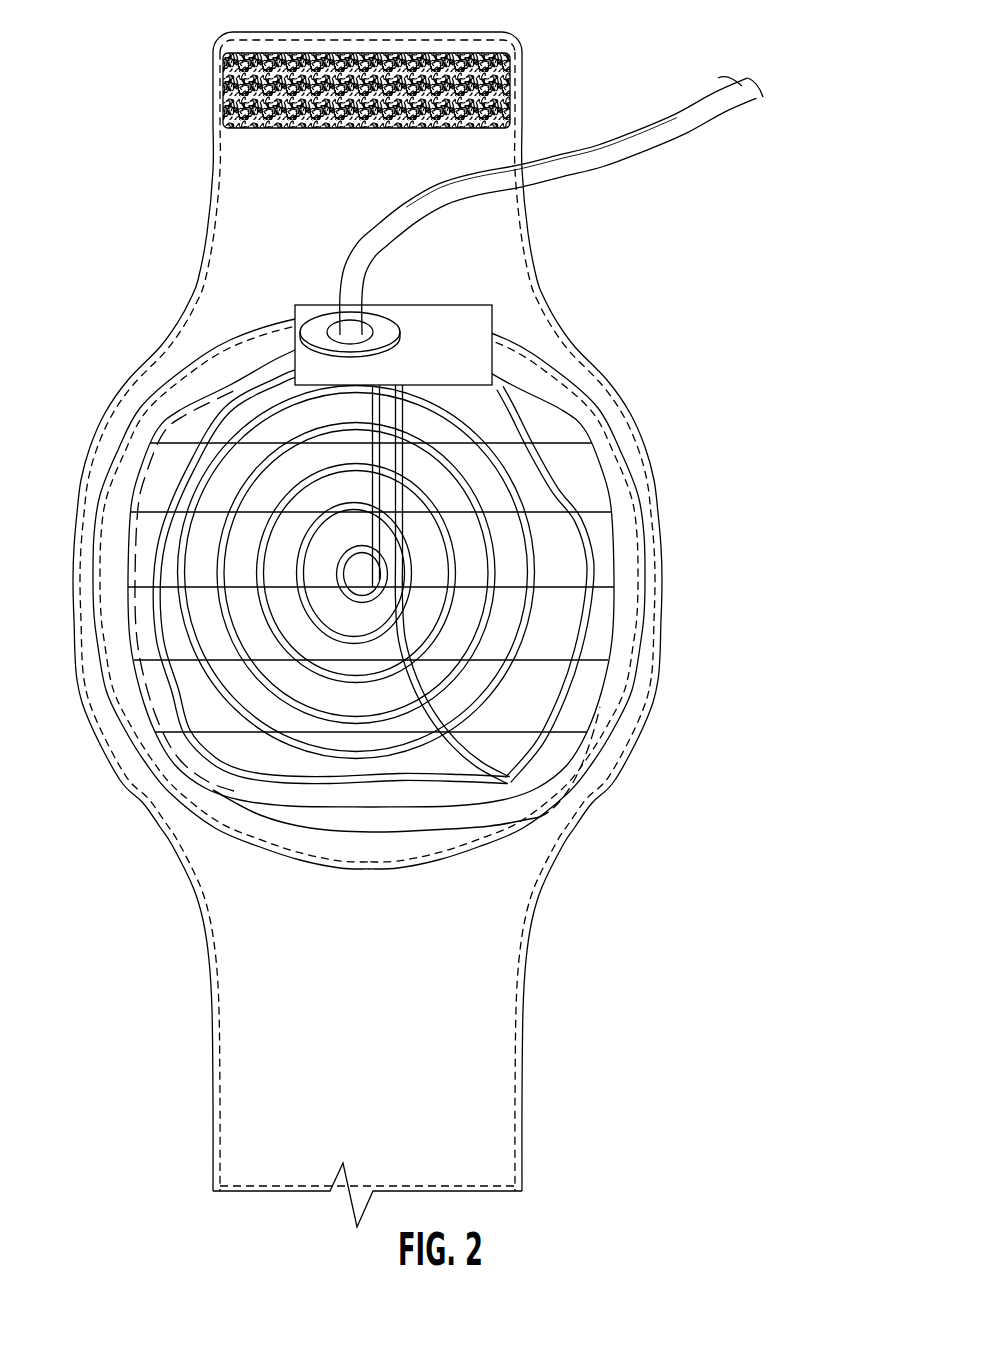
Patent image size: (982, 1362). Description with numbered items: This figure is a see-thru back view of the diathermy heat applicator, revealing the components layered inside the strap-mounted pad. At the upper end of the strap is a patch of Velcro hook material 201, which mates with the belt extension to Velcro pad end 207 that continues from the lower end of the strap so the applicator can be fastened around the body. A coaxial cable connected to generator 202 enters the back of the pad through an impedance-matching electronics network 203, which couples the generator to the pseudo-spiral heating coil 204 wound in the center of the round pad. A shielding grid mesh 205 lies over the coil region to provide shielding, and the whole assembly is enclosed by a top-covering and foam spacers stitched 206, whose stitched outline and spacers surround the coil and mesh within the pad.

The hook material 201 is at (510, 57).
The coaxial cable connected to generator 202 is at (667, 143).
The impedance-matching electronics network 203 is at (492, 325).
The pseudo-spiral heating coil 204 is at (157, 443).
The shielding grid mesh 205 is at (560, 583).
The top-covering and foam spacers stitched 206 is at (203, 817).
The belt extension to Velcro pad end 207 is at (205, 1100).